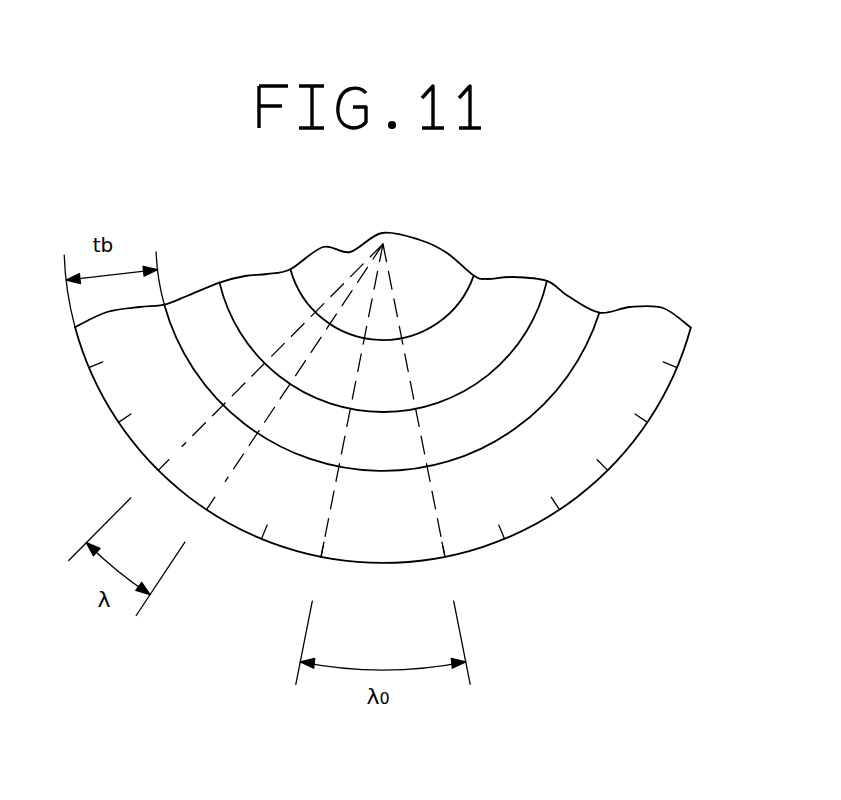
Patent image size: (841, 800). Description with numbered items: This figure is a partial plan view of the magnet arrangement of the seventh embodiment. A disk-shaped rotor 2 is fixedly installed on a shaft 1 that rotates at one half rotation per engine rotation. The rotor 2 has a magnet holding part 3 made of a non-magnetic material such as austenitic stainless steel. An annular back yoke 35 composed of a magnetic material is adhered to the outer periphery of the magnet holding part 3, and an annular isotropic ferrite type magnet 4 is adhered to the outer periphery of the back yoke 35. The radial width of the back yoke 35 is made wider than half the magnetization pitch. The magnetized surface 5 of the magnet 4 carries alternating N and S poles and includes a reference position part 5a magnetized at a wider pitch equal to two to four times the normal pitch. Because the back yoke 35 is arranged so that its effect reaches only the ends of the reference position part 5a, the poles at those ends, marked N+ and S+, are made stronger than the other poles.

The shaft 1 is at (433, 247).
The rotor 2 is at (238, 287).
The magnet holding part 3 is at (503, 275).
The back yoke 35 is at (567, 290).
The magnet 4 is at (665, 317).
The magnetized surface 5 is at (663, 393).
The reference position part 5a is at (380, 568).